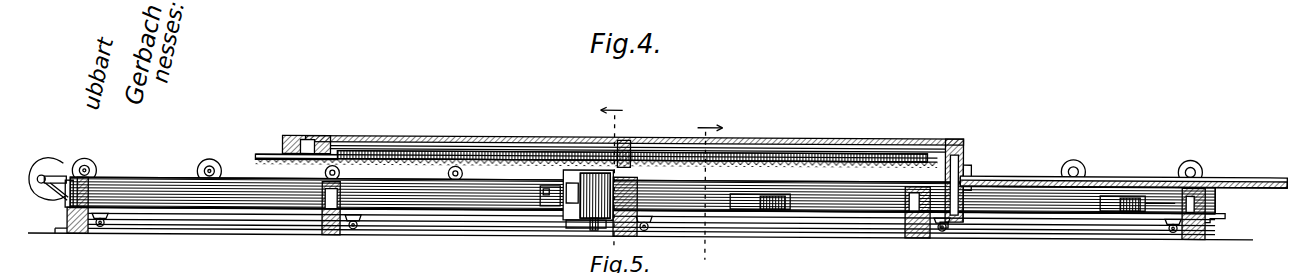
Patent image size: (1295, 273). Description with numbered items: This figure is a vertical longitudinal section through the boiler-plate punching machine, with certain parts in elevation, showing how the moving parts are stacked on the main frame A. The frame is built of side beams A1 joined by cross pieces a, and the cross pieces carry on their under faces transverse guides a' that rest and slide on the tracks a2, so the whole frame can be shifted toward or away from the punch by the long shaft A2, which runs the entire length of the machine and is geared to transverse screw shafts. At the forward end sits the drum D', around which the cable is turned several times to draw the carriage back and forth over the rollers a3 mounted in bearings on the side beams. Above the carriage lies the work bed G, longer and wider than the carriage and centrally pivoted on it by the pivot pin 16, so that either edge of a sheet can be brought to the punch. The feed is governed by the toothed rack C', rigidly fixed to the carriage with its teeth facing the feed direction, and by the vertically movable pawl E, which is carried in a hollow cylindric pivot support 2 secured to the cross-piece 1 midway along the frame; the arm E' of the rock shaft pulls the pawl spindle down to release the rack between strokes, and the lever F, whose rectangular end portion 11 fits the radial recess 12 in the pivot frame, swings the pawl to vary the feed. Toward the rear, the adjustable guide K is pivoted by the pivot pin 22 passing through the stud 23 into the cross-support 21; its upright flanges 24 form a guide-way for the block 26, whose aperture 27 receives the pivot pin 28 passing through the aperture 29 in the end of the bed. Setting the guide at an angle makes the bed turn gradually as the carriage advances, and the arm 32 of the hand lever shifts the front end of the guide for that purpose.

The drum D' is at (59, 173).
The rollers a3 is at (95, 160).
The aperture 29 is at (305, 135).
The toothed bar or rack C' is at (632, 136).
The lever F is at (560, 146).
The pawl E is at (588, 168).
The rectangular end portion 11 is at (617, 173).
The pivot pin 16 is at (627, 140).
The radial recess 12 is at (707, 190).
The work bed G is at (843, 135).
The pivot pin 28 is at (950, 135).
The aperture 27 is at (966, 162).
The block 26 is at (972, 175).
The main frame A is at (1030, 165).
The flanges 24 is at (1137, 170).
The adjustable guide K is at (1248, 177).
The hollow cylindric pivot support 2 is at (595, 195).
The stud 23 is at (1083, 202).
The guides a' is at (1206, 213).
The tracks a2 is at (338, 227).
The shaft A2 is at (275, 224).
The side beams A1 is at (1052, 208).
The cross-support 21 is at (965, 215).
The pivot pin 22 is at (947, 228).
The cross pieces a is at (901, 229).
The arm 32 is at (755, 205).
The arm E' is at (577, 245).
The cross-piece 1 is at (547, 203).